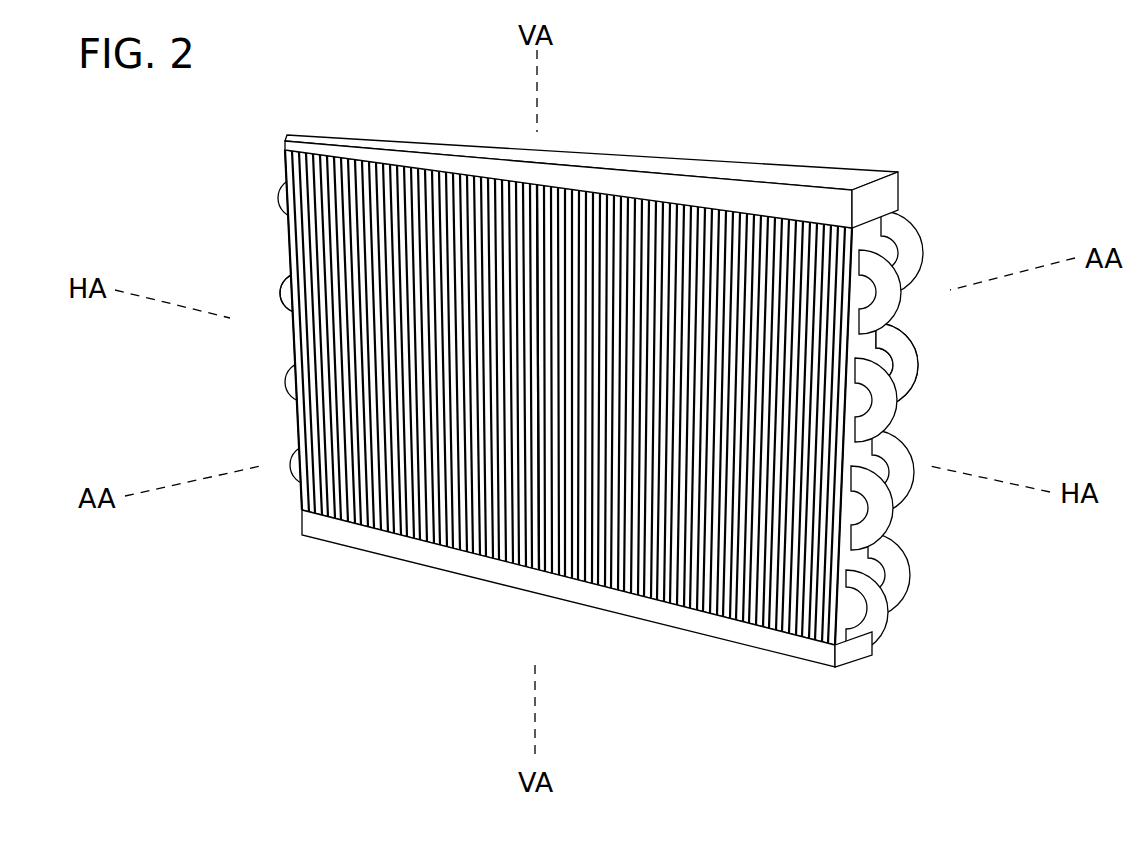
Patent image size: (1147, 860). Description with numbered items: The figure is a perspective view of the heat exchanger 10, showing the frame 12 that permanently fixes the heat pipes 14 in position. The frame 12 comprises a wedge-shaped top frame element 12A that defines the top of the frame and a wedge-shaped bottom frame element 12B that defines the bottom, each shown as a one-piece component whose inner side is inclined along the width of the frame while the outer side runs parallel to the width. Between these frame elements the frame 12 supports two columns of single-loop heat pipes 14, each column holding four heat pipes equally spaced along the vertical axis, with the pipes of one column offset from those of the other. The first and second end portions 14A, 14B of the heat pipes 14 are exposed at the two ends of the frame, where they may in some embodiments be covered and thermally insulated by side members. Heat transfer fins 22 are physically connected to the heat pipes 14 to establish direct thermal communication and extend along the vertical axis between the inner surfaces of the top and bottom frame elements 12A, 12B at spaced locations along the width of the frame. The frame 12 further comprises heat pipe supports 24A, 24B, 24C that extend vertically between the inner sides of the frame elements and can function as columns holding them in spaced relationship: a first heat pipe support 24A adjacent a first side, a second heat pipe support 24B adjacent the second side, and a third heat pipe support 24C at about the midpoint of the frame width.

The heat exchanger 10 is at (640, 692).
The frame 12 is at (580, 401).
The top frame element 12A is at (893, 183).
The bottom frame element 12B is at (316, 545).
The heat pipes 14 is at (925, 252).
The first end portions 14A is at (285, 200).
The second end portions 14B is at (885, 298).
The heat transfer fins 22 is at (428, 172).
The first heat pipe support 24A is at (290, 240).
The second heat pipe support 24B is at (862, 350).
The third heat pipe support 24C is at (540, 545).